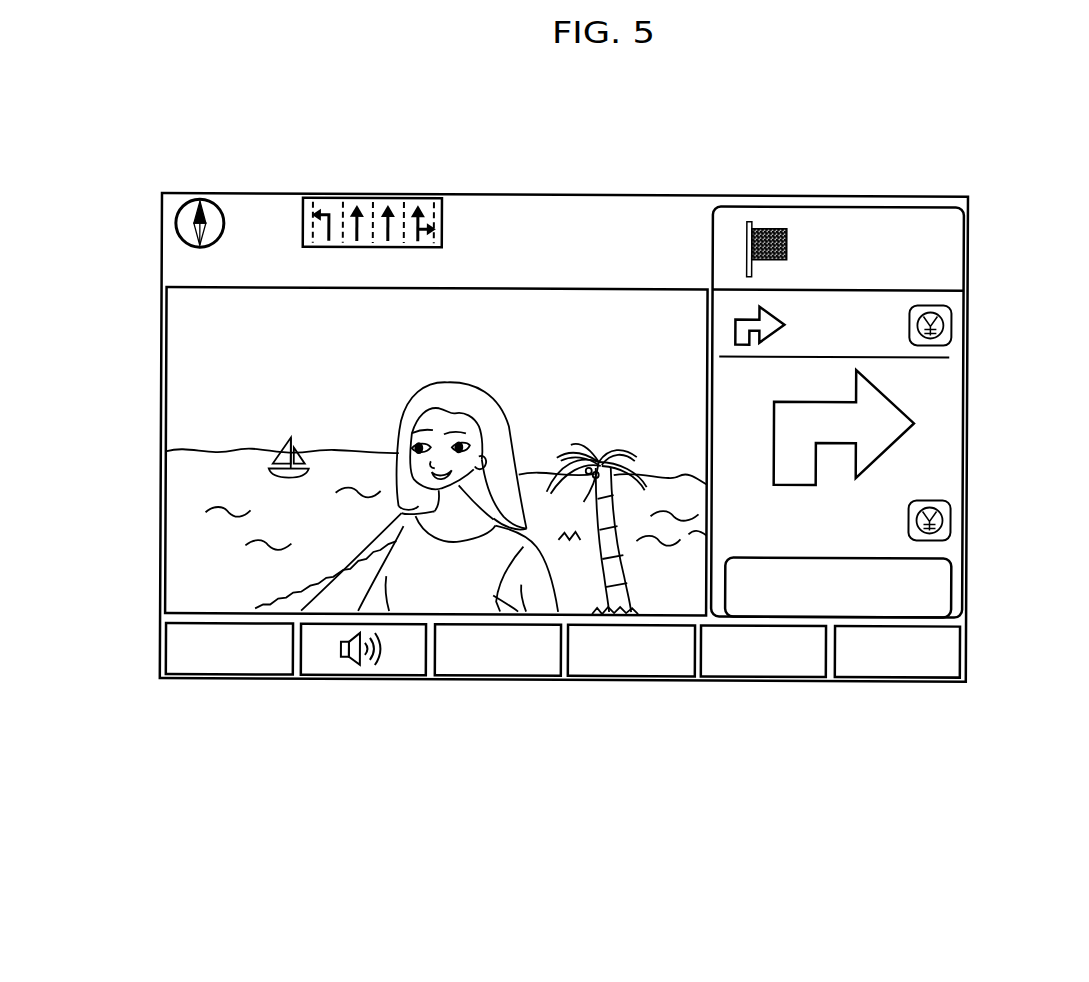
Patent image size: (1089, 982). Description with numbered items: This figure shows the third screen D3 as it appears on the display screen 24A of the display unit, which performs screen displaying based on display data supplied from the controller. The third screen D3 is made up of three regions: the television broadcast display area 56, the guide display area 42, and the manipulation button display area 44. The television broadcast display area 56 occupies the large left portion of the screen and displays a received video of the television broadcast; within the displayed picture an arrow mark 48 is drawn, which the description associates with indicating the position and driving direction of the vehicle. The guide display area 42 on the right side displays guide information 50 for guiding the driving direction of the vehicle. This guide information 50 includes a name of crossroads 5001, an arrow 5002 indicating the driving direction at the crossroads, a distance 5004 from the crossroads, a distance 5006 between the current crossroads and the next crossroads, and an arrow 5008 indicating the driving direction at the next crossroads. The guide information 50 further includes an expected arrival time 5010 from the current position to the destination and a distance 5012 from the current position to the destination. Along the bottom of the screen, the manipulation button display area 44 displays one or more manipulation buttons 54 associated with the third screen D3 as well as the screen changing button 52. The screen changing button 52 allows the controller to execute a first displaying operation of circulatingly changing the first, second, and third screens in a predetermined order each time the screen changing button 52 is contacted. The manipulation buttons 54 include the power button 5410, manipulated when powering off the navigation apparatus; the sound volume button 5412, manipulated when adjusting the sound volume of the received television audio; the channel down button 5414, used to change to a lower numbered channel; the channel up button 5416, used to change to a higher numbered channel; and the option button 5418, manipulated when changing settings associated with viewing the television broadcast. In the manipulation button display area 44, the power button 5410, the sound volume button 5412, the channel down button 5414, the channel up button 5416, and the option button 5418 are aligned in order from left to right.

The third screen D3 is at (636, 118).
The display screen 24A is at (345, 197).
The guide information 50 is at (977, 212).
The expected arrival time 5010 is at (945, 225).
The distance from the current position to the destination 5012 is at (923, 265).
The arrow indicating the driving direction at the next crossroads 5008 is at (737, 318).
The distance between the current crossroads and the next crossroads 5006 is at (877, 318).
The guide display area 42 is at (948, 385).
The arrow indicating the driving direction at the crossroads 5002 is at (898, 447).
The distance from the crossroads 5004 is at (880, 503).
The name of crossroads 5001 is at (950, 575).
The television broadcast display area 56 is at (185, 352).
The arrow mark 48 is at (595, 529).
The manipulation button display area 44 is at (982, 663).
The manipulation buttons 54 is at (626, 690).
The power button 5410 is at (230, 660).
The sound volume button 5412 is at (335, 660).
The channel down button 5414 is at (470, 660).
The channel up button 5416 is at (605, 660).
The screen changing button 52 is at (715, 660).
The option button 5418 is at (870, 660).